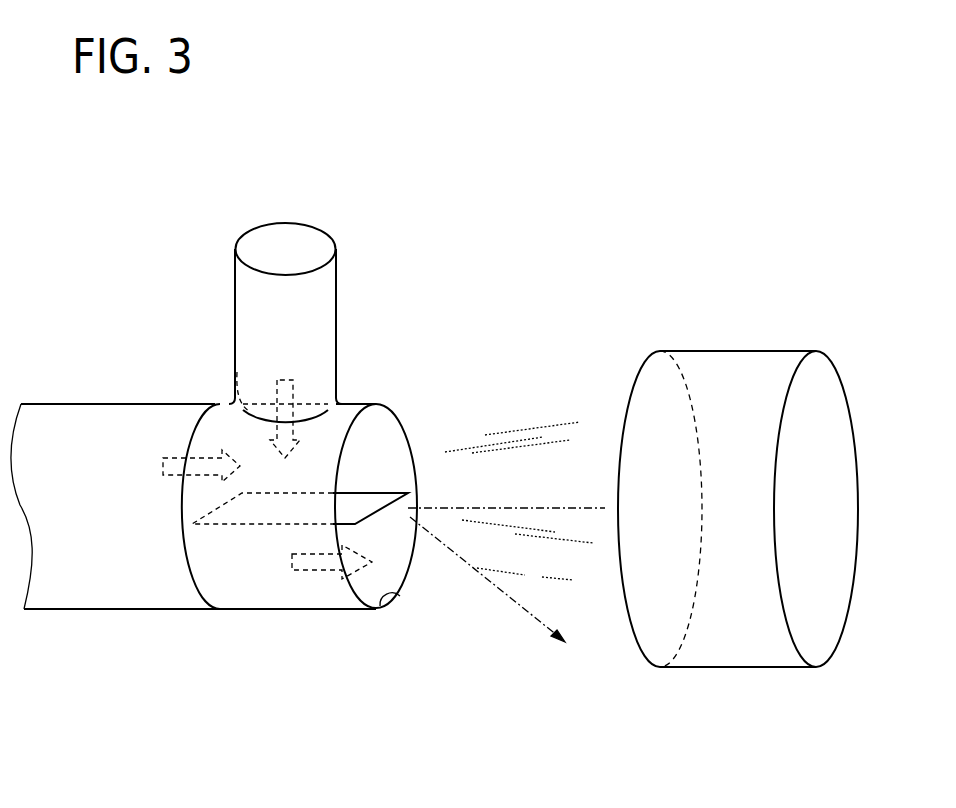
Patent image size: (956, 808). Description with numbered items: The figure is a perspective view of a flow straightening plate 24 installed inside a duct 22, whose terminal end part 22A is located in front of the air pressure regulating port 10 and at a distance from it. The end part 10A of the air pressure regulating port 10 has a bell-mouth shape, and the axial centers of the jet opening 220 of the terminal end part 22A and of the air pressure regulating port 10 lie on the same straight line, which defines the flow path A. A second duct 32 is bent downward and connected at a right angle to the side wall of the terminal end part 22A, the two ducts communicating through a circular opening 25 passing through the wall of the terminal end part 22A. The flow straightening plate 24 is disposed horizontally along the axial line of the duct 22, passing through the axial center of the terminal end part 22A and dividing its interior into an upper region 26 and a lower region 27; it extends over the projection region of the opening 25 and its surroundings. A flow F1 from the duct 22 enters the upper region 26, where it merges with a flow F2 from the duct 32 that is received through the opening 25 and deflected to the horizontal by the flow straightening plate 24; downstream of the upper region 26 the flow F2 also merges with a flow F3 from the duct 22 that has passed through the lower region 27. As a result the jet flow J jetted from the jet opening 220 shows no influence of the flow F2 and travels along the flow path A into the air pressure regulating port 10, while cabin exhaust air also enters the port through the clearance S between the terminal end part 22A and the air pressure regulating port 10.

The air pressure regulating port 10 is at (730, 351).
The end part of the air pressure regulating port 10A is at (632, 388).
The duct 22 is at (60, 404).
The terminal end part of the duct 22A is at (358, 404).
The jet opening 220 is at (382, 609).
The flow straightening plate 24 is at (360, 493).
The circular opening 25 is at (236, 368).
The upper region 26 is at (314, 480).
The lower region 27 is at (252, 586).
The duct 32 is at (336, 285).
The flow from the duct F1 is at (177, 466).
The flow from the duct F2 is at (285, 404).
The flow from the duct F3 is at (347, 562).
The jet flow J is at (515, 430).
The clearance S is at (583, 586).
The flow path A is at (506, 491).